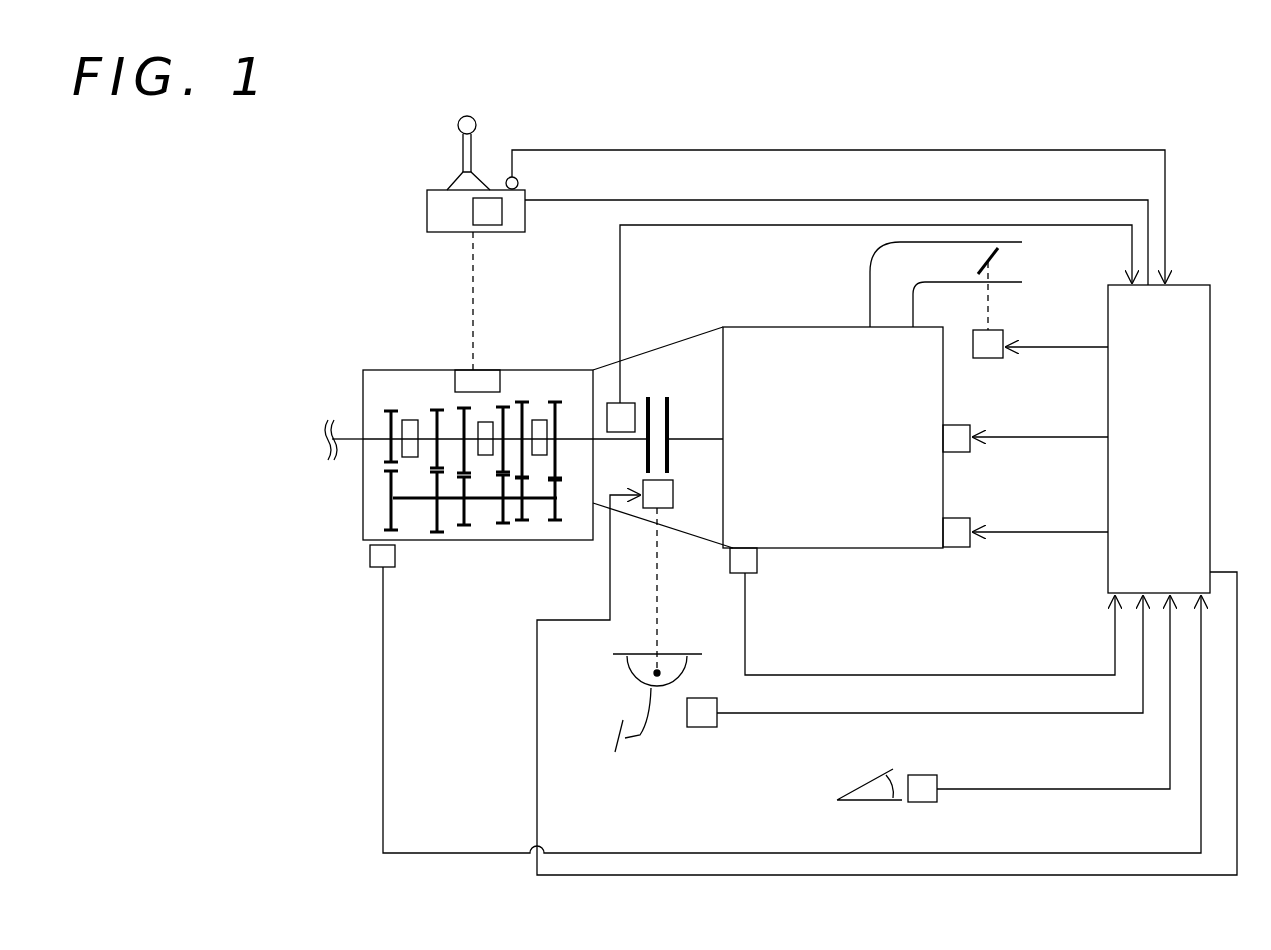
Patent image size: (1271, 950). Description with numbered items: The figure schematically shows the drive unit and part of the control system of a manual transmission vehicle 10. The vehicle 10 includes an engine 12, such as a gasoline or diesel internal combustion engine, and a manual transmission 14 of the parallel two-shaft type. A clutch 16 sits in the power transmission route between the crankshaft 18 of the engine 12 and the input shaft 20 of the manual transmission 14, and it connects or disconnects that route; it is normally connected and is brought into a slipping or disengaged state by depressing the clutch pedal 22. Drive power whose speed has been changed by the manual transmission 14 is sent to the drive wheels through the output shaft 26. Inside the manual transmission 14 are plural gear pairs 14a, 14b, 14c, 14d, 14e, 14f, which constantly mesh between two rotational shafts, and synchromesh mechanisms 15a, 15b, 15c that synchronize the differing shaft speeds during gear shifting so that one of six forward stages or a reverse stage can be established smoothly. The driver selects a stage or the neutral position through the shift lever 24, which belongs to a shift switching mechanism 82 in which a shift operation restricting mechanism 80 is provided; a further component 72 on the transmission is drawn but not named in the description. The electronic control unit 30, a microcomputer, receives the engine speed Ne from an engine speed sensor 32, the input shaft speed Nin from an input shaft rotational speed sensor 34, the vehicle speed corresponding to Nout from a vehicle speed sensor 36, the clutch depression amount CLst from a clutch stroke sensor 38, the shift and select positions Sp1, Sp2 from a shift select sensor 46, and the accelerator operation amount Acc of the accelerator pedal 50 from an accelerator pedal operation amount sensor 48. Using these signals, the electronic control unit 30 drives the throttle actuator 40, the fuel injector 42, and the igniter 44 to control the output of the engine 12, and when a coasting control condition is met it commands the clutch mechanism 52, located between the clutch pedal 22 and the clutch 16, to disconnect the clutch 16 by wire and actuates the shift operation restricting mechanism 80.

The vehicle 10 is at (1102, 112).
The engine 12 is at (815, 338).
The manual transmission 14 is at (343, 388).
The gear pair 14a is at (387, 395).
The gear pair 14b is at (433, 395).
The gear pair 14c is at (465, 540).
The gear pair 14d is at (506, 398).
The gear pair 14e is at (523, 530).
The gear pair 14f is at (556, 528).
The synchromesh mechanism 15a is at (410, 460).
The synchromesh mechanism 15b is at (485, 458).
The synchromesh mechanism 15c is at (539, 418).
The clutch 16 is at (656, 385).
The crankshaft 18 is at (697, 425).
The input shaft 20 is at (578, 425).
The clutch pedal 22 is at (637, 748).
The shift lever 24 is at (478, 120).
The output shaft 26 is at (353, 445).
The electronic control unit 30 is at (1203, 318).
The engine speed sensor 32 is at (755, 570).
The input shaft rotational speed sensor 34 is at (612, 400).
The vehicle speed sensor 36 is at (368, 568).
The clutch stroke sensor 38 is at (708, 722).
The throttle actuator 40 is at (990, 355).
The fuel injector 42 is at (958, 545).
The igniter 44 is at (958, 450).
The shift select sensor 46 is at (522, 185).
The accelerator pedal operation amount sensor 48 is at (925, 800).
The accelerator pedal 50 is at (862, 790).
The clutch mechanism 52 is at (668, 495).
The shift fork/select mechanism 72 is at (480, 378).
The shift operation restricting mechanism 80 is at (490, 222).
The shift switching mechanism 82 is at (413, 172).